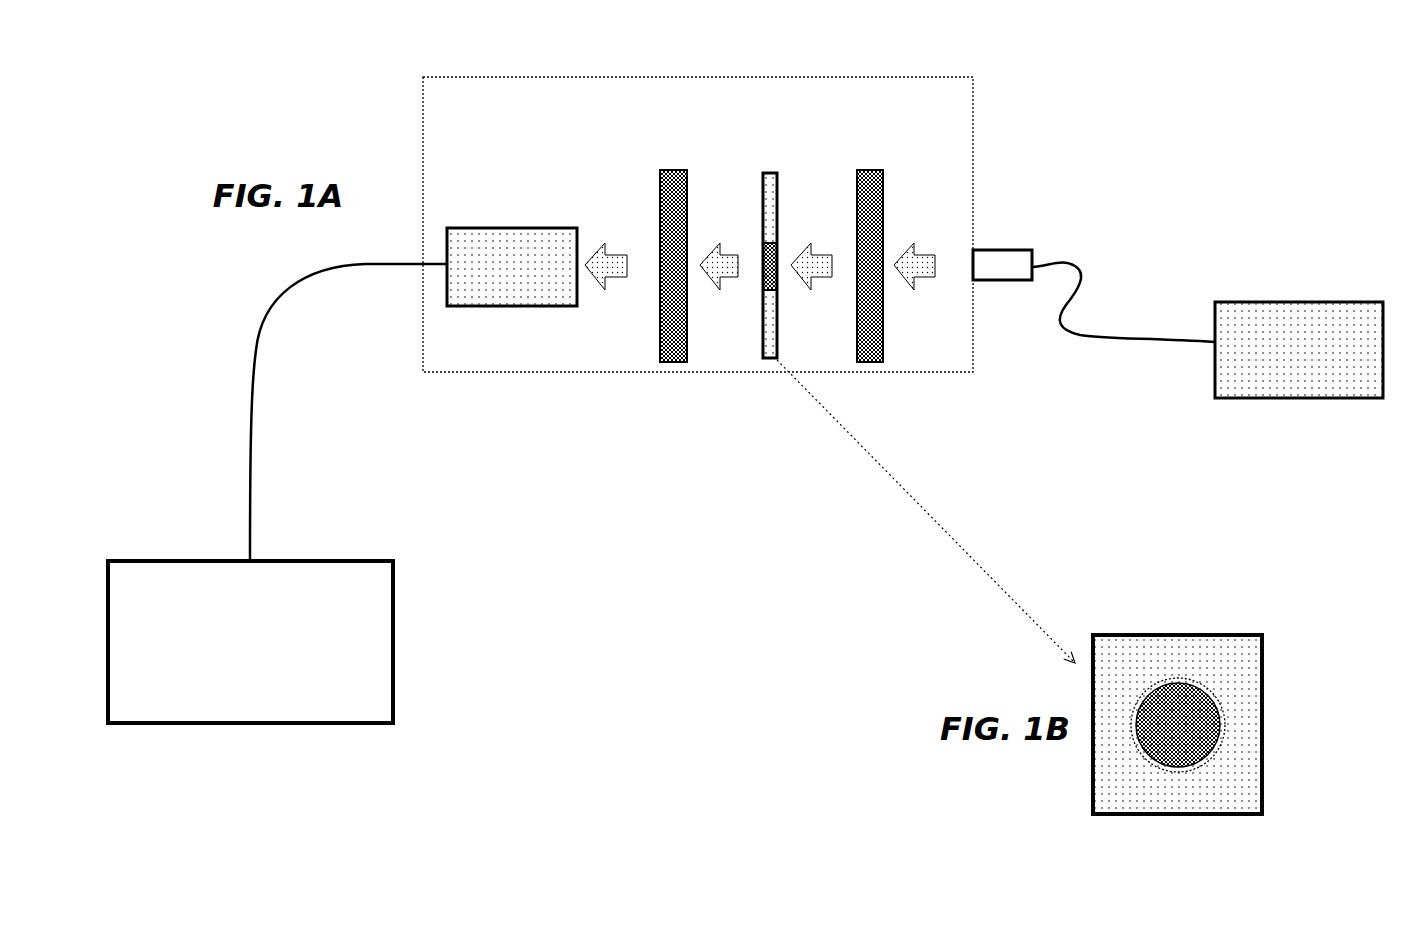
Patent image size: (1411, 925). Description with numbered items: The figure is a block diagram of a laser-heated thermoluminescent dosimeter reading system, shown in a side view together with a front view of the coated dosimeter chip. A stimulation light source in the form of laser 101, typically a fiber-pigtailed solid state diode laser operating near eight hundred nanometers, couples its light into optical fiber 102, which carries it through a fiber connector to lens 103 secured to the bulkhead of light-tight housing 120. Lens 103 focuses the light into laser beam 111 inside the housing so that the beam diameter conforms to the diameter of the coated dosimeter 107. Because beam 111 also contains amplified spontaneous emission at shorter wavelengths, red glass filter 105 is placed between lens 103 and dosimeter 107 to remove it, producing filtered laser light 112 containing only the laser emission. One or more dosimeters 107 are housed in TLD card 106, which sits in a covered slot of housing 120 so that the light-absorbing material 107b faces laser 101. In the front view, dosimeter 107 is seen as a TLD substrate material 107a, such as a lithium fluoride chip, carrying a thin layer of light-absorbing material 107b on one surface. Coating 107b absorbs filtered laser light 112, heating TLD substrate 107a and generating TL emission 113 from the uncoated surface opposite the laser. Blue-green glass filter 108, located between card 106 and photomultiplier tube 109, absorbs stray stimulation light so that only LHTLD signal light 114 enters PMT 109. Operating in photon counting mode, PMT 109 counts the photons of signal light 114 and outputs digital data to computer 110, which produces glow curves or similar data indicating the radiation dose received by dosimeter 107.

In FIG. 1A, the laser 101 is at (1301, 292).
In FIG. 1A, the optical fiber 102 is at (1152, 372).
In FIG. 1A, the lens 103 is at (1008, 243).
In FIG. 1A, the red glass filter 105 is at (863, 160).
In FIG. 1A, the TLD card 106 is at (762, 380).
In FIG. 1B, the TLD card 106 is at (1177, 757).
In FIG. 1A, the dosimeter 107 is at (775, 247).
In FIG. 1B, the TLD substrate material 107a is at (1140, 760).
In FIG. 1B, the light-absorbing material 107b is at (1205, 718).
In FIG. 1A, the blue-green glass filter 108 is at (677, 160).
In FIG. 1A, the photomultiplier tube 109 is at (497, 215).
In FIG. 1A, the computer 110 is at (236, 742).
In FIG. 1A, the laser beam 111 is at (924, 285).
In FIG. 1A, the filtered laser light 112 is at (818, 285).
In FIG. 1A, the TL emission 113 is at (726, 285).
In FIG. 1A, the LHTLD signal light 114 is at (612, 288).
In FIG. 1A, the light-tight housing 120 is at (983, 103).